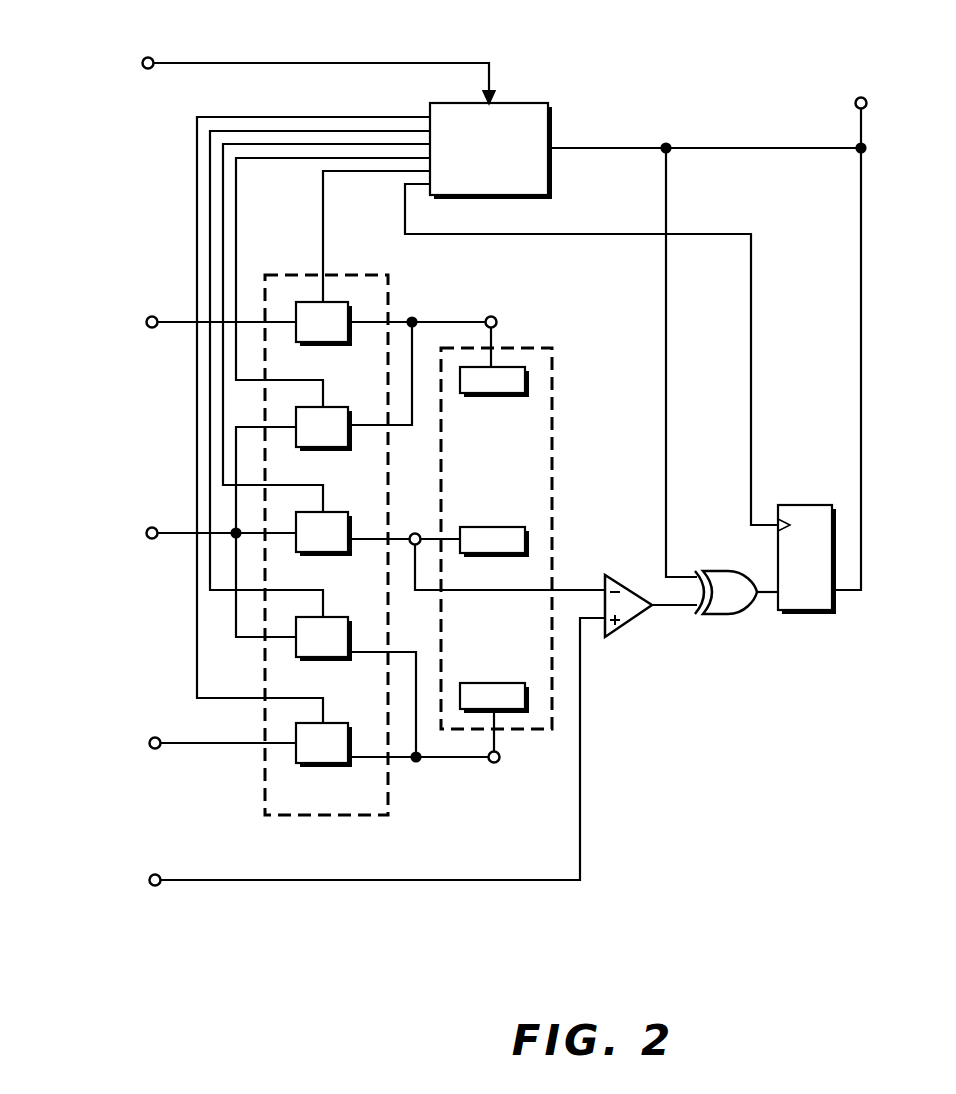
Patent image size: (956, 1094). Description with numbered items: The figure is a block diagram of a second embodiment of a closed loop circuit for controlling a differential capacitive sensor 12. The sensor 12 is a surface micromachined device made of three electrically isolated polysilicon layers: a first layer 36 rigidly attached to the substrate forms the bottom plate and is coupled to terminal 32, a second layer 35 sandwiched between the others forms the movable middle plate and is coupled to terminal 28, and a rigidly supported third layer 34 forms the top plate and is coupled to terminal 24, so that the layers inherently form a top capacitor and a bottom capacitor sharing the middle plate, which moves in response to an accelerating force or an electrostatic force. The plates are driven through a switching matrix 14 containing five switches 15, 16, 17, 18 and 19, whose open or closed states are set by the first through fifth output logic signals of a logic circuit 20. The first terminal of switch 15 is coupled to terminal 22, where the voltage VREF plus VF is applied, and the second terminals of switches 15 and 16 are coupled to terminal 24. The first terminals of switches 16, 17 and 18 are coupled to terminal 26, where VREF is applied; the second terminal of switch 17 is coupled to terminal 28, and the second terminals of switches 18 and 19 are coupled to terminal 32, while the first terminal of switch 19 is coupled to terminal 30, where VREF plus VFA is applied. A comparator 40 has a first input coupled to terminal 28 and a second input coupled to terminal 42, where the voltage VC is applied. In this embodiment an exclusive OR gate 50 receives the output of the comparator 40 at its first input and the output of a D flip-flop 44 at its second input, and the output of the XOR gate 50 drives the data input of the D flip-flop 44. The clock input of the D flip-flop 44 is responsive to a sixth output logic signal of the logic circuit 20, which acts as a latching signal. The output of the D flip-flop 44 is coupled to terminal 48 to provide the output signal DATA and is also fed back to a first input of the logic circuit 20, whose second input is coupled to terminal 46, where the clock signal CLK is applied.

The differential capacitive sensor 12 is at (553, 415).
The switching matrix 14 is at (262, 796).
The switch 15 is at (333, 346).
The switch 16 is at (333, 451).
The switch 17 is at (333, 556).
The switch 18 is at (333, 661).
The switch 19 is at (333, 767).
The logic circuit 20 is at (537, 102).
The terminal 22 is at (152, 329).
The terminal 24 is at (493, 316).
The terminal 26 is at (152, 540).
The terminal 28 is at (415, 533).
The terminal 30 is at (156, 736).
The terminal 32 is at (494, 763).
The third layer 34 is at (491, 398).
The second layer 35 is at (492, 526).
The first layer 36 is at (492, 683).
The comparator 40 is at (623, 587).
The terminal 42 is at (156, 874).
The D flip-flop 44 is at (814, 616).
The terminal 46 is at (151, 57).
The terminal 48 is at (859, 94).
The exclusive OR gate 50 is at (722, 616).